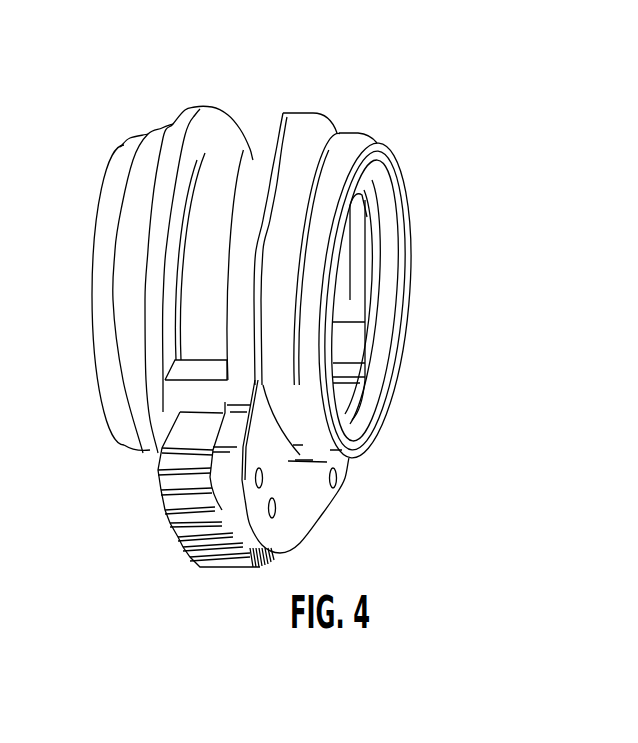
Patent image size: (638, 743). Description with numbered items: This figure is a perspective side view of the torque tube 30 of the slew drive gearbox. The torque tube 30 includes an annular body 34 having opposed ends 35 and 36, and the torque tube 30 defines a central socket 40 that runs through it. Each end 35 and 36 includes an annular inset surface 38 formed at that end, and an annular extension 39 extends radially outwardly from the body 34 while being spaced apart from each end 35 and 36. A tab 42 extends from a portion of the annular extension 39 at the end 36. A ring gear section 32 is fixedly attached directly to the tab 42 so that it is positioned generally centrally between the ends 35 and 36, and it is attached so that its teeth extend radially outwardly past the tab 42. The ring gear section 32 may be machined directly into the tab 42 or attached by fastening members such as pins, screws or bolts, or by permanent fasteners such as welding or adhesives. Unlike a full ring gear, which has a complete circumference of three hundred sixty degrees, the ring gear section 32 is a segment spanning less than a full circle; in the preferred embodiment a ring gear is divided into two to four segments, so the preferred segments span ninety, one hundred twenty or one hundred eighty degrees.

The torque tube 30 is at (446, 250).
The ring gear section 32 is at (212, 525).
The annular body 34 is at (238, 136).
The end 35 is at (118, 143).
The end 36 is at (380, 144).
The annular inset surface 38 is at (323, 205).
The annular extension 39 is at (205, 107).
The central socket 40 is at (350, 297).
The tab 42 is at (327, 503).